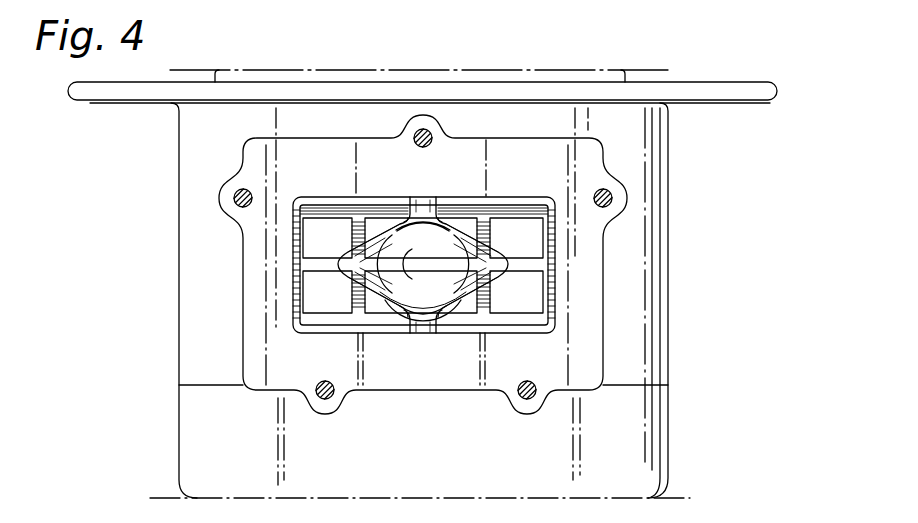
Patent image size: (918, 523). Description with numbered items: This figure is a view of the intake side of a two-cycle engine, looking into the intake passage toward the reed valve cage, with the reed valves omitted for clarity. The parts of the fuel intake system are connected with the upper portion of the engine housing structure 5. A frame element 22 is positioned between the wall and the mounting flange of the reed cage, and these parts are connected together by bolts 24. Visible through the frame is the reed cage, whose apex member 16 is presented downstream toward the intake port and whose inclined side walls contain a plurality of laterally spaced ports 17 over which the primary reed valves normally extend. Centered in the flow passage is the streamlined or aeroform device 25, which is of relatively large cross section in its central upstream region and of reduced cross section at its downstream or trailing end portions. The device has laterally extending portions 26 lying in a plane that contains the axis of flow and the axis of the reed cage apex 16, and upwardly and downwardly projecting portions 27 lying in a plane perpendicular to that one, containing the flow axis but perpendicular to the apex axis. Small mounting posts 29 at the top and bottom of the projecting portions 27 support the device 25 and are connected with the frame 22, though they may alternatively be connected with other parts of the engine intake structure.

The upper portion of the engine housing structure 5 is at (181, 278).
The apex member 16 is at (318, 262).
The laterally spaced ports 17 is at (508, 303).
The frame element 22 is at (400, 391).
The bolts 24 is at (233, 197).
The aeroform device 25 is at (486, 232).
The laterally extending portions 26 is at (352, 274).
The upwardly and downwardly projecting portions 27 is at (408, 232).
The mounting posts 29 is at (431, 208).